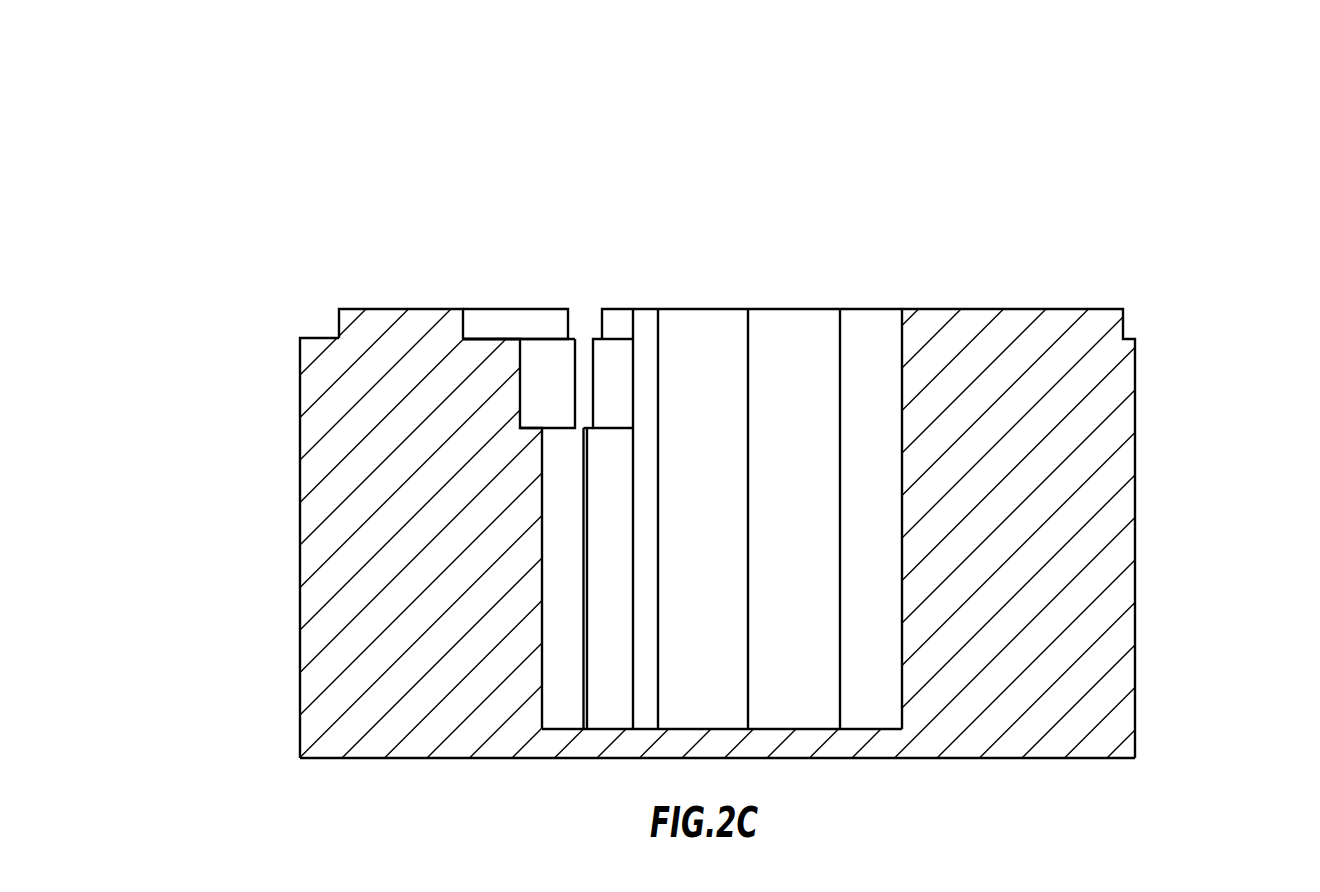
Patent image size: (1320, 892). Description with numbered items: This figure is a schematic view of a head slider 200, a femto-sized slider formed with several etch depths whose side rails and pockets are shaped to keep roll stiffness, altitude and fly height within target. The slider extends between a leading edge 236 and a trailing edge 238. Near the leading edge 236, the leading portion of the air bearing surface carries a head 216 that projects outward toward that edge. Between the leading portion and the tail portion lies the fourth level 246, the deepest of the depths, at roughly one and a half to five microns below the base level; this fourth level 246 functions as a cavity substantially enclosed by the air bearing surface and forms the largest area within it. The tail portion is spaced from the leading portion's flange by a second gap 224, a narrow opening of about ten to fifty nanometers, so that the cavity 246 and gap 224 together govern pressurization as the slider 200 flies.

The head slider 200 is at (266, 98).
The head 216 is at (387, 309).
The second gap 224 is at (585, 340).
The leading edge 236 is at (300, 394).
The trailing edge 238 is at (1135, 463).
The fourth level 246 is at (720, 397).